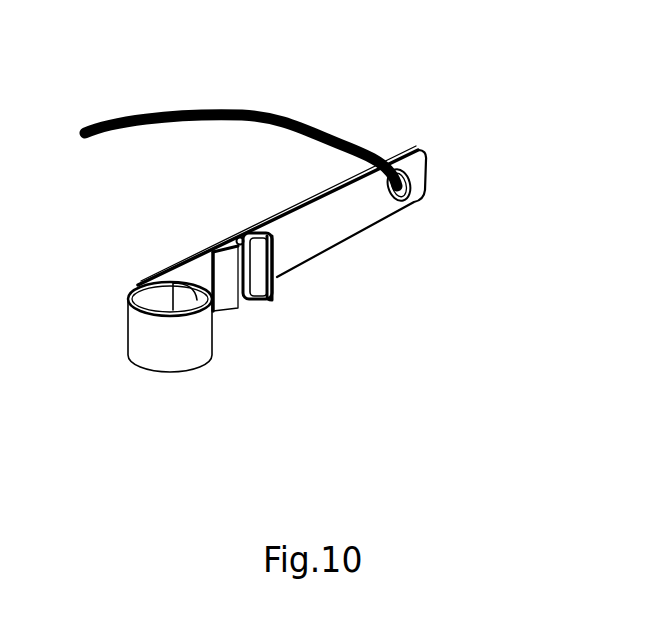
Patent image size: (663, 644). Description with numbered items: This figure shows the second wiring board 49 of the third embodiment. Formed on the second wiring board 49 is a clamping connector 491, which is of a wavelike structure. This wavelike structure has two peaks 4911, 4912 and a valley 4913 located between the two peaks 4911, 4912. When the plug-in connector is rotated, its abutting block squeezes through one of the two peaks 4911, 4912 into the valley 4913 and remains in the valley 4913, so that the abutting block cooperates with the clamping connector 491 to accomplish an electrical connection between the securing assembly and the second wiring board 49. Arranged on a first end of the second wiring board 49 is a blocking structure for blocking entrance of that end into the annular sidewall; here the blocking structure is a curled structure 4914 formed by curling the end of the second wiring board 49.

The second wiring board 49 is at (423, 197).
The clamping connector 491 is at (234, 244).
The peak 4911 is at (230, 277).
The peak 4912 is at (274, 281).
The valley 4913 is at (236, 243).
The curled structure 4914 is at (142, 345).